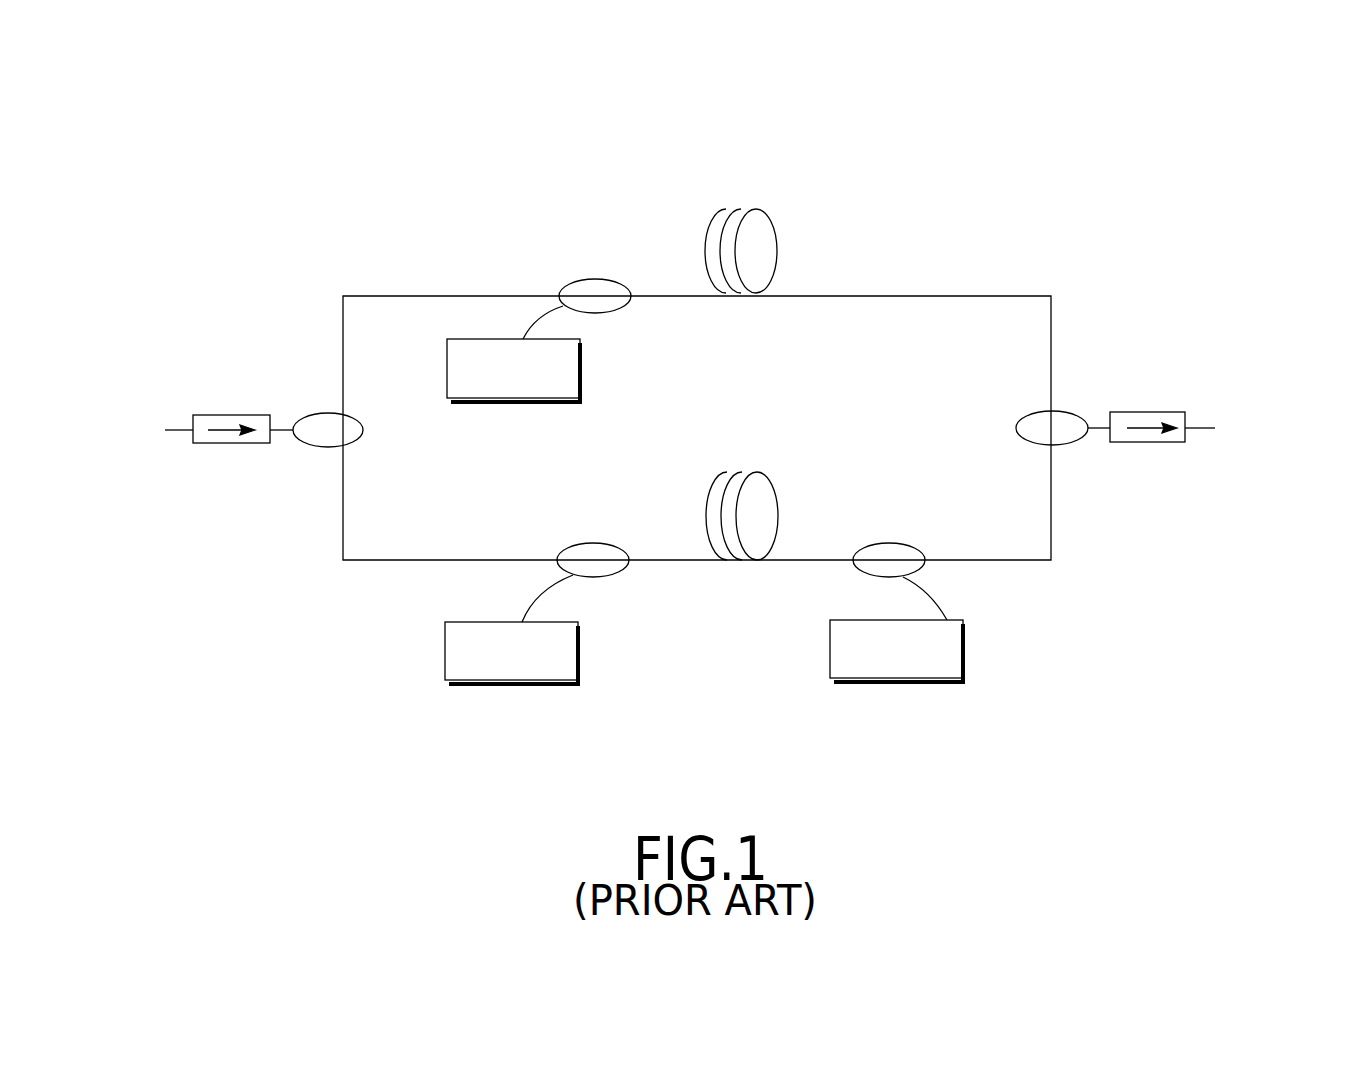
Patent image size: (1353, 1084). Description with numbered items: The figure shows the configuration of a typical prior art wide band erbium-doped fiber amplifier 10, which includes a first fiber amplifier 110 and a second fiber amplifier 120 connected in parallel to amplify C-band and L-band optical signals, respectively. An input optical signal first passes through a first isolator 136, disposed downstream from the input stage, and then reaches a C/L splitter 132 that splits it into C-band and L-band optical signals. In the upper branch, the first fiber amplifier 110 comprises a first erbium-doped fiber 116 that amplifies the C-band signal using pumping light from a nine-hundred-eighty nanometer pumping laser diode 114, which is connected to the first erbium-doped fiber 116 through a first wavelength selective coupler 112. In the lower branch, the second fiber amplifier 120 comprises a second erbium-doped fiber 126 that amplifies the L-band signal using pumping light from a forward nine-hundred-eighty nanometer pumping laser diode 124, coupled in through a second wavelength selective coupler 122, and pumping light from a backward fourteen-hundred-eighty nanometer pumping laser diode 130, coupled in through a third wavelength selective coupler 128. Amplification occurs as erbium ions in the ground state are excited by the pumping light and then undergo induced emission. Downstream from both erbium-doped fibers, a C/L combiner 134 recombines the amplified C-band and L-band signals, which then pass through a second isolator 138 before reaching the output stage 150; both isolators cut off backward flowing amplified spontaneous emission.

The optical fiber amplifier 10 is at (1040, 235).
The first fiber amplifier 110 is at (678, 198).
The first wavelength selective coupler 112 is at (623, 262).
The 980 nm pumping laser diode 114 is at (584, 364).
The first erbium-doped fiber 116 is at (755, 208).
The second fiber amplifier 120 is at (735, 577).
The second wavelength selective coupler 122 is at (618, 578).
The forward 980 nm pumping laser diode 124 is at (523, 680).
The second erbium-doped fiber 126 is at (758, 472).
The third wavelength selective coupler 128 is at (887, 543).
The backward 1,480 nm pumping laser diode 130 is at (907, 678).
The C/L splitter 132 is at (323, 447).
The C/L combiner 134 is at (1093, 398).
The first isolator 136 is at (250, 397).
The second isolator 138 is at (1172, 442).
The output stage 150 is at (1242, 445).